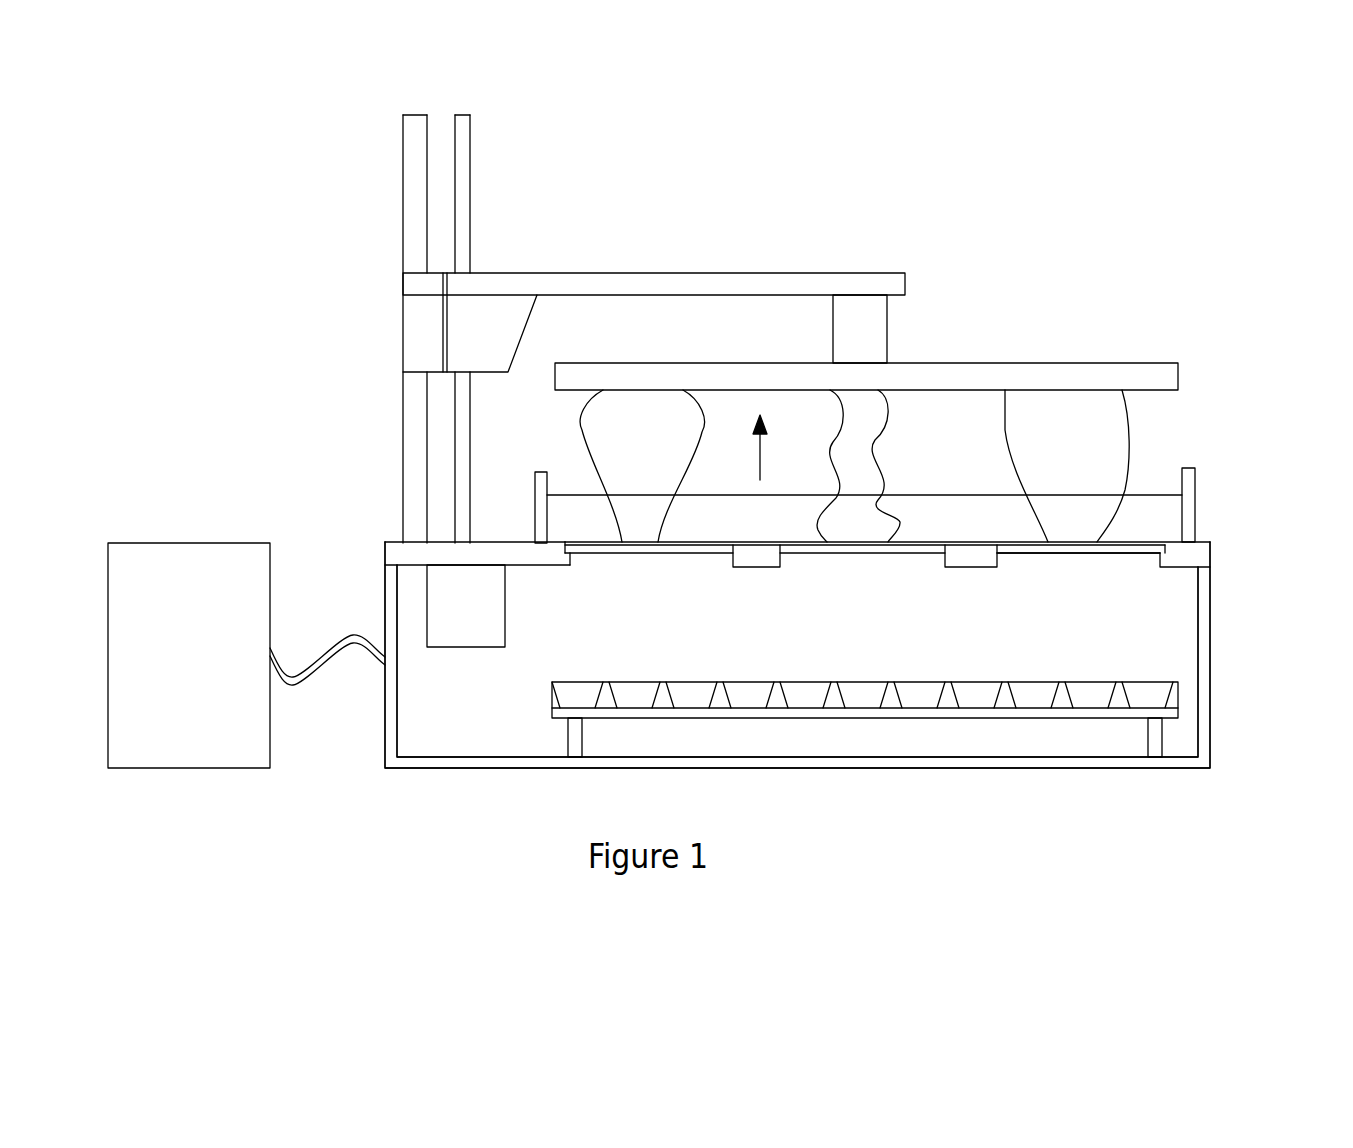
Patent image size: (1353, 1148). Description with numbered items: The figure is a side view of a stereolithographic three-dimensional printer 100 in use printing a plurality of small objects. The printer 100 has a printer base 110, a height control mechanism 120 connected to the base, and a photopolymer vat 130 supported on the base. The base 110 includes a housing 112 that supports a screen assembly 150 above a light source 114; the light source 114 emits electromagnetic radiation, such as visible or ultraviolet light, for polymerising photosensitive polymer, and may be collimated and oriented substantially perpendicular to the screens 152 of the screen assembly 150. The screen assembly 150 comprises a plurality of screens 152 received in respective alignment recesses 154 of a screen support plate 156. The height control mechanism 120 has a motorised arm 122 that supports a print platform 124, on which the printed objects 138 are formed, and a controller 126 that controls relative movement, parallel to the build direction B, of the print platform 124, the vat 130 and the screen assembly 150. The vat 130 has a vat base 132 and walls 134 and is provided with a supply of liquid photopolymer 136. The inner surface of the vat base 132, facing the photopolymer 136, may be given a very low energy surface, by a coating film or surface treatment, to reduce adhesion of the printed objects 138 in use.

The stereolithographic 3D printer 100 is at (277, 148).
The printer base 110 is at (357, 808).
The housing 112 is at (508, 760).
The light source 114 is at (867, 700).
The height control mechanism 120 is at (372, 289).
The motorised arm 122 is at (742, 275).
The print platform 124 is at (1150, 363).
The controller 126 is at (162, 768).
The photopolymer vat 130 is at (1218, 500).
The vat base 132 is at (727, 543).
The walls 134 is at (538, 490).
The liquid photopolymer 136 is at (575, 523).
The 3D printed objects 138 is at (855, 412).
The screen assembly 150 is at (1152, 605).
The screens 152 is at (1048, 546).
The alignment recesses 154 is at (987, 546).
The screen support plate 156 is at (1192, 558).
The build direction B is at (763, 457).